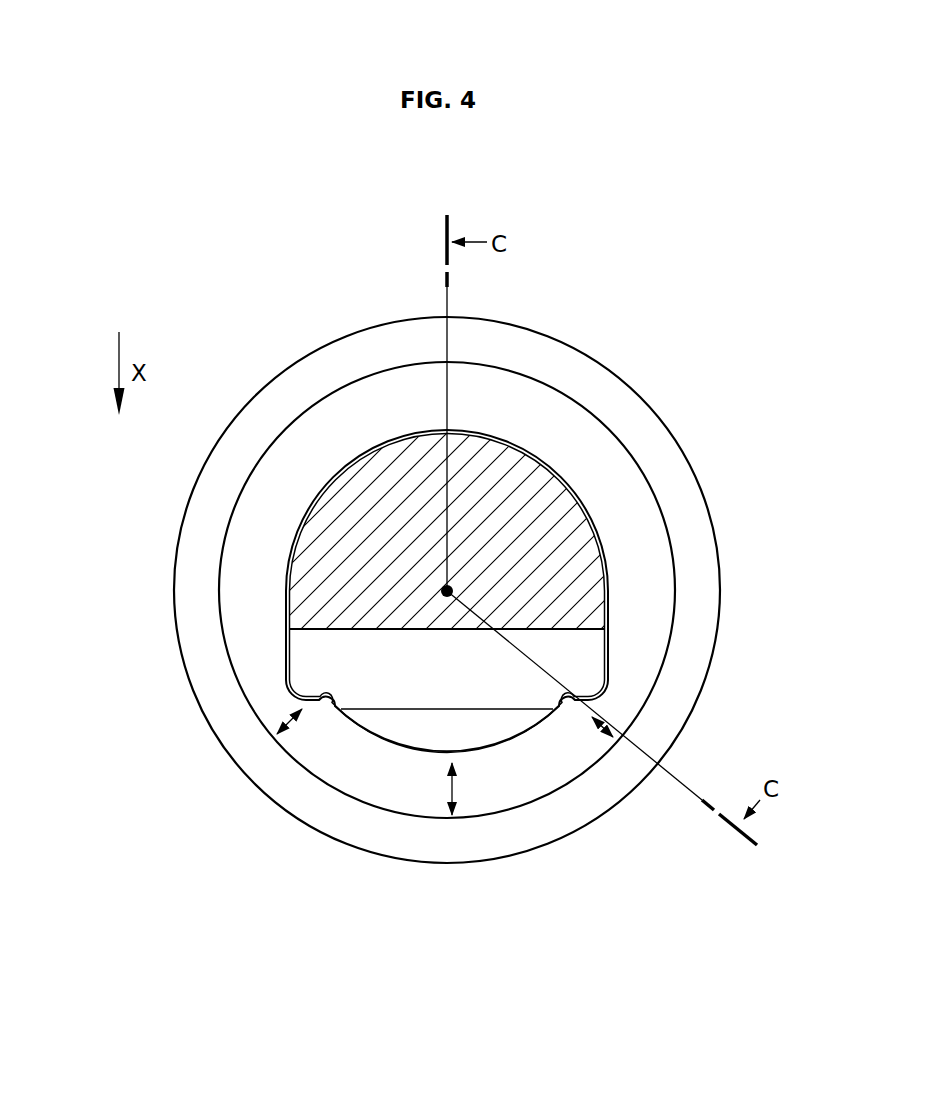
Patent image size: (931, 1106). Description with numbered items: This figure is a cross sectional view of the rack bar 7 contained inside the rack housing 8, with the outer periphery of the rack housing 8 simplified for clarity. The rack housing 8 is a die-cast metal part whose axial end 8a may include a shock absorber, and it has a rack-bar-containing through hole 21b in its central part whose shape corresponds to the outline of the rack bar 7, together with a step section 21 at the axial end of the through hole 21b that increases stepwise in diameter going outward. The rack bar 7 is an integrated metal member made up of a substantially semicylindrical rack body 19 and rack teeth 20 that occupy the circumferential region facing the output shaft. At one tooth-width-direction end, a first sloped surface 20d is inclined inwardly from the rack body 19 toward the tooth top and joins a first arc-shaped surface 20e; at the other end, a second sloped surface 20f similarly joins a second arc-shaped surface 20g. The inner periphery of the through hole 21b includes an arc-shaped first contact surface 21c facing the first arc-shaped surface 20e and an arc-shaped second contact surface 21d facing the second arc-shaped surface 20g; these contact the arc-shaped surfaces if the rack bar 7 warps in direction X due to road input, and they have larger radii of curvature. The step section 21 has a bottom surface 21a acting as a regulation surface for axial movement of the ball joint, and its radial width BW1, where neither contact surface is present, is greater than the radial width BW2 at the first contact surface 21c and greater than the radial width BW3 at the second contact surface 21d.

The rack bar 7 is at (532, 430).
The rack housing 8 is at (312, 352).
The axial end 8a is at (392, 343).
The rack body 19 is at (478, 458).
The rack teeth 20 is at (460, 690).
The first sloped surface 20d is at (607, 658).
The first arc-shaped surface 20e is at (590, 700).
The second sloped surface 20f is at (290, 650).
The second arc-shaped surface 20g is at (295, 696).
The step section 21 is at (238, 491).
The bottom surface 21a is at (233, 598).
The rack-bar-containing through hole 21b is at (570, 490).
The first contact surface 21c is at (551, 702).
The second contact surface 21d is at (334, 707).
The radial width BW1 is at (450, 790).
The radial width BW2 is at (597, 712).
The radial width BW3 is at (287, 718).